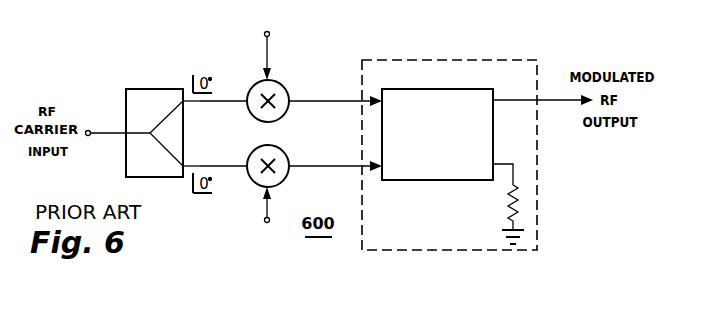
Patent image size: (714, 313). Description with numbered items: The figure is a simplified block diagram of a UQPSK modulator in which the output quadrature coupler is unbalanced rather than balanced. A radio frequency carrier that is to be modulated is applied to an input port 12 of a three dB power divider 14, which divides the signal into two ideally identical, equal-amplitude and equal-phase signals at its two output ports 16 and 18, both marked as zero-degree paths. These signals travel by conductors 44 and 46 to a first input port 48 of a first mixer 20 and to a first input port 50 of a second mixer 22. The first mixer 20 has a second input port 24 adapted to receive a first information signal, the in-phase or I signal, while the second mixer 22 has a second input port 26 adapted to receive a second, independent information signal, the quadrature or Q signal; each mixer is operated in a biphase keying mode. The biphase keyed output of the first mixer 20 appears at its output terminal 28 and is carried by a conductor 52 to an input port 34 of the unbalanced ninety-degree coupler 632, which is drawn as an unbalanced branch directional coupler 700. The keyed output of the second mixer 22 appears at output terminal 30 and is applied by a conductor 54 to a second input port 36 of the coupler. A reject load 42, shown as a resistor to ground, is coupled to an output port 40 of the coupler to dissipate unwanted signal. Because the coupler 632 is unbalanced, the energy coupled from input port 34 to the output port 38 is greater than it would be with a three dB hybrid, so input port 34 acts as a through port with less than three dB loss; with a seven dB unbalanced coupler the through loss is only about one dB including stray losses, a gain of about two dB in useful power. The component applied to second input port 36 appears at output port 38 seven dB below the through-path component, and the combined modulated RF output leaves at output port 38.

The input port 12 is at (113, 148).
The 3 dB power divider 14 is at (153, 89).
The output port 16 is at (185, 104).
The output port 18 is at (185, 164).
The first mixer 20 is at (284, 84).
The second mixer 22 is at (283, 154).
The second input port 24 is at (264, 33).
The second input port 26 is at (264, 222).
The output terminal 28 is at (287, 109).
The output terminal 30 is at (288, 174).
The input port 34 is at (357, 102).
The input port 36 is at (357, 165).
The output port 38 is at (539, 100).
The output port 40 is at (498, 163).
The reject load 42 is at (507, 194).
The conductor 44 is at (230, 99).
The conductor 46 is at (230, 167).
The first input port 48 is at (250, 109).
The first input port 50 is at (250, 158).
The conductor 52 is at (321, 99).
The conductor 54 is at (346, 167).
The unbalanced 90° coupler 632 is at (452, 60).
The unbalanced branch directional coupler 700 is at (417, 180).